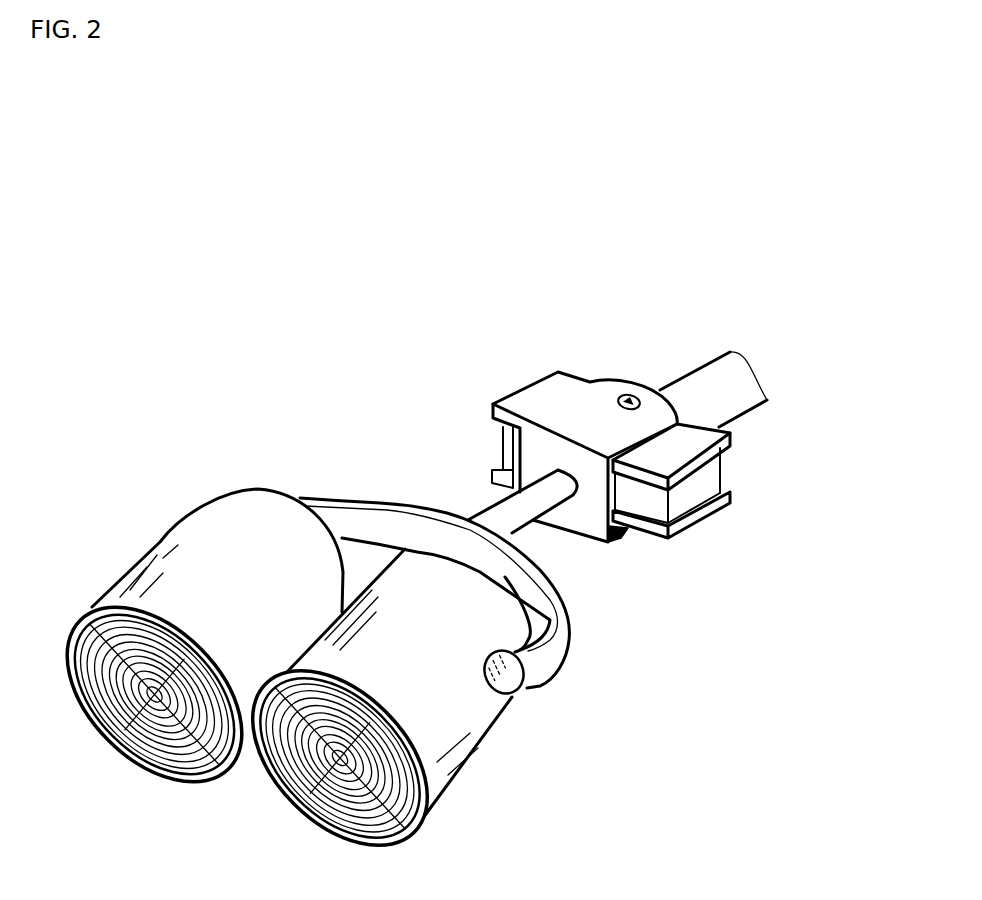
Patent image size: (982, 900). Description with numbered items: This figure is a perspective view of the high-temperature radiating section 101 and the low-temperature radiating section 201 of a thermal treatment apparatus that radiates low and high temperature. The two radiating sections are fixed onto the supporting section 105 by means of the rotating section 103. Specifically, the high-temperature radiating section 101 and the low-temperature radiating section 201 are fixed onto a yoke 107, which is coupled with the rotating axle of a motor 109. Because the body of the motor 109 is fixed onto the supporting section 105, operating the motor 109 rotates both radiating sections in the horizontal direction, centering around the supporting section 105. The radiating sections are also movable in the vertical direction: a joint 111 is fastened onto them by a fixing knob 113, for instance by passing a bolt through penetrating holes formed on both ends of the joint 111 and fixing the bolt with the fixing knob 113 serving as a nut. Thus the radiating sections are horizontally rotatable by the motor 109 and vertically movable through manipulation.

The high-temperature radiating section 101 is at (397, 583).
The rotating section 103 is at (578, 366).
The supporting section 105 is at (732, 372).
The yoke 107 is at (620, 533).
The motor 109 is at (711, 484).
The joint 111 is at (441, 525).
The fixing knob 113 is at (525, 676).
The low-temperature radiating section 201 is at (159, 542).